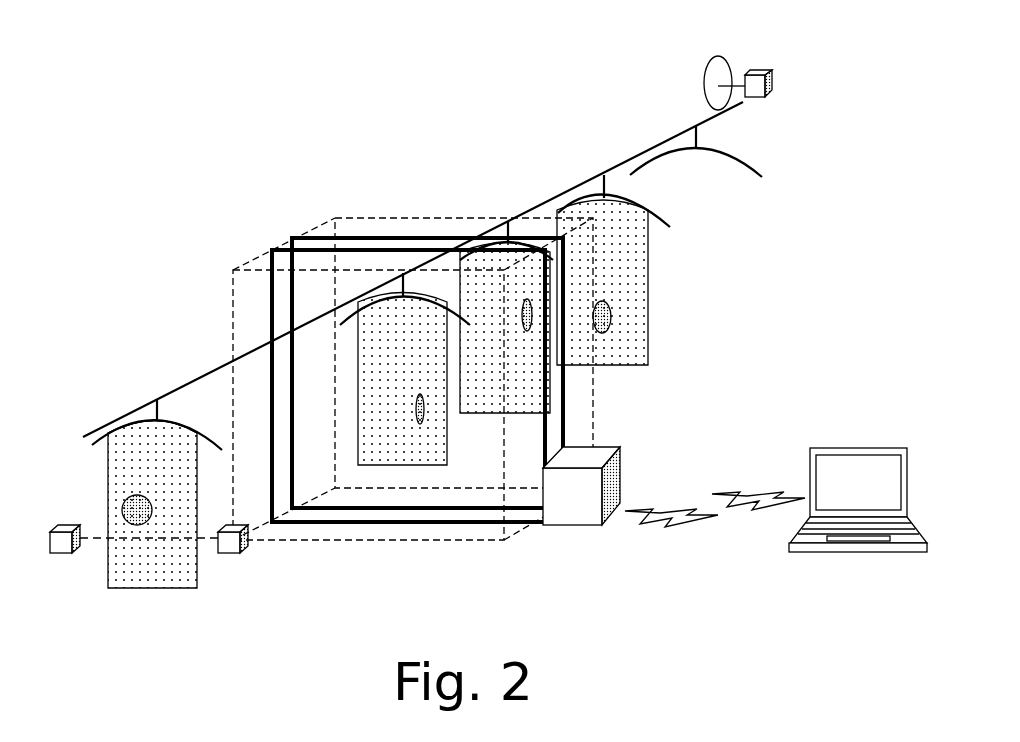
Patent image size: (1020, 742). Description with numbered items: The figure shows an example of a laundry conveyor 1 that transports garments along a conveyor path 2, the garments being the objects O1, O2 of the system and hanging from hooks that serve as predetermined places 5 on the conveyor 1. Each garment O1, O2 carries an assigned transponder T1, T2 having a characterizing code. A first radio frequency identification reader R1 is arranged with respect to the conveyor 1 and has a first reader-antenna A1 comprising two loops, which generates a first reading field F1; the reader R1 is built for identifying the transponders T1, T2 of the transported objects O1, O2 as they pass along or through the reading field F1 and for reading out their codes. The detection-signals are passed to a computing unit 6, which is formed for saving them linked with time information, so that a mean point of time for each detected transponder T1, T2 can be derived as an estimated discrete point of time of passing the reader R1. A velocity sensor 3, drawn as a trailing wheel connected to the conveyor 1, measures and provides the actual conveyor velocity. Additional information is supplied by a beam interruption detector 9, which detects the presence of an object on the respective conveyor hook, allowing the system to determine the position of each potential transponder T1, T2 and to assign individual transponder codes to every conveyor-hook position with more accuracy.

The conveyor 1 is at (413, 269).
The conveyor path 2 is at (645, 133).
The velocity sensor 3 is at (780, 67).
The predetermined places 5 is at (740, 161).
The computing unit 6 is at (858, 467).
The beam interruption detector 9 is at (187, 579).
The first reading field F1 is at (401, 358).
The first reader-antenna A1 is at (365, 380).
The object O1 is at (131, 490).
The object O2 is at (661, 270).
The transponder T1 is at (94, 497).
The transponder T2 is at (696, 312).
The first radio frequency identification reader R1 is at (674, 525).